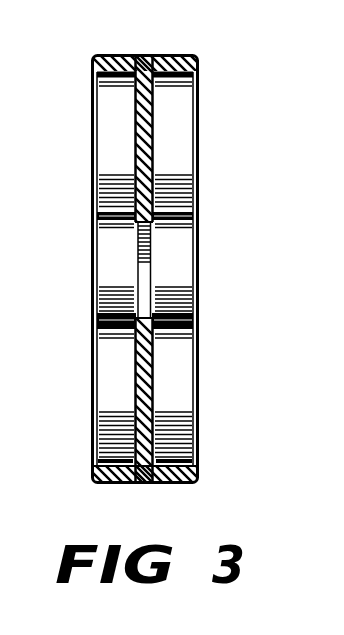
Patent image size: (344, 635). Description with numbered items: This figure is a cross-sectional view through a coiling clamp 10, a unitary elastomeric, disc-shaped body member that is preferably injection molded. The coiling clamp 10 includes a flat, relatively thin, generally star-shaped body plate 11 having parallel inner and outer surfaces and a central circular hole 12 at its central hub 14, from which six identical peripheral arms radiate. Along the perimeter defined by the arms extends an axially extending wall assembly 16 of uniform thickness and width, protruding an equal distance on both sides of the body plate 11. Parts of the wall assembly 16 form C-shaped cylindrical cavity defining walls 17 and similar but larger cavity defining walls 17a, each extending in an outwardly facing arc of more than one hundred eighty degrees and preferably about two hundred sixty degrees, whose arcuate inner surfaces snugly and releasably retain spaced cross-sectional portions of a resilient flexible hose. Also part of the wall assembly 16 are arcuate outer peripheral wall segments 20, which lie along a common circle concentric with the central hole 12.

The coiling clamp 10 is at (91, 182).
The body plate 11 is at (159, 380).
The central circular hole 12 is at (138, 262).
The central hub 14 is at (135, 153).
The wall assembly 16 is at (157, 56).
The cavity defining wall 17 is at (189, 132).
The larger cavity defining wall 17a is at (187, 402).
The outer peripheral wall segment 20 is at (126, 57).